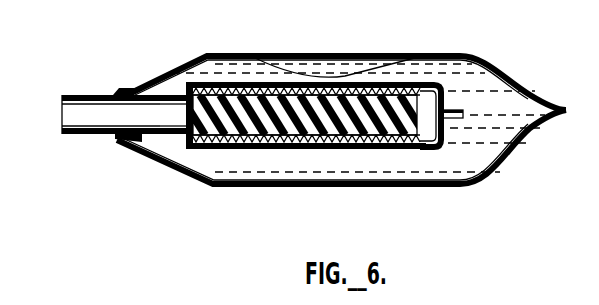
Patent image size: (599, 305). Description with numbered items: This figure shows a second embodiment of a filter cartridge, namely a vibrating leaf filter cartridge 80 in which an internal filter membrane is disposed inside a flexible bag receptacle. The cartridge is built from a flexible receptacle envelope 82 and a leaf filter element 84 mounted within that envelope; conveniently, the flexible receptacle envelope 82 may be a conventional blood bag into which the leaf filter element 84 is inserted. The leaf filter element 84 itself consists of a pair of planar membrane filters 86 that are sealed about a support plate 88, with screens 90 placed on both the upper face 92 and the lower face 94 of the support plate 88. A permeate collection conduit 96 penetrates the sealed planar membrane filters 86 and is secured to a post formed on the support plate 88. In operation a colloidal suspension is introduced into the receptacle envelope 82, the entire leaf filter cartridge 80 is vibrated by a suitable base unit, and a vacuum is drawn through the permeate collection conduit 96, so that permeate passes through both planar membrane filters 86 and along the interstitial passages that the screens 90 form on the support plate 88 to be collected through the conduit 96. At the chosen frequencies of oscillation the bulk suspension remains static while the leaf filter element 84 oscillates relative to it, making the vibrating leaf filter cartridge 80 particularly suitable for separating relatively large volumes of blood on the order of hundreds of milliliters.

The vibrating leaf filter cartridge 80 is at (467, 36).
The flexible receptacle envelope 82 is at (154, 158).
The leaf filter element 84 is at (254, 95).
The planar membrane filter 86 is at (438, 86).
The support plate 88 is at (253, 130).
The screen 90 is at (217, 90).
The upper face 92 is at (333, 84).
The lower face 94 is at (390, 122).
The permeate collection conduit 96 is at (78, 96).